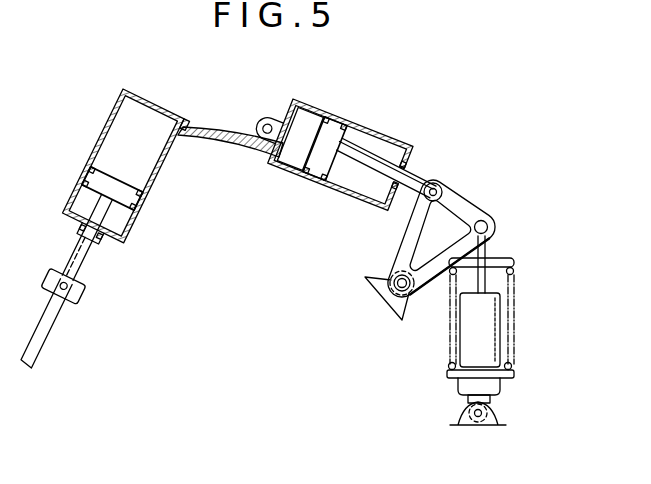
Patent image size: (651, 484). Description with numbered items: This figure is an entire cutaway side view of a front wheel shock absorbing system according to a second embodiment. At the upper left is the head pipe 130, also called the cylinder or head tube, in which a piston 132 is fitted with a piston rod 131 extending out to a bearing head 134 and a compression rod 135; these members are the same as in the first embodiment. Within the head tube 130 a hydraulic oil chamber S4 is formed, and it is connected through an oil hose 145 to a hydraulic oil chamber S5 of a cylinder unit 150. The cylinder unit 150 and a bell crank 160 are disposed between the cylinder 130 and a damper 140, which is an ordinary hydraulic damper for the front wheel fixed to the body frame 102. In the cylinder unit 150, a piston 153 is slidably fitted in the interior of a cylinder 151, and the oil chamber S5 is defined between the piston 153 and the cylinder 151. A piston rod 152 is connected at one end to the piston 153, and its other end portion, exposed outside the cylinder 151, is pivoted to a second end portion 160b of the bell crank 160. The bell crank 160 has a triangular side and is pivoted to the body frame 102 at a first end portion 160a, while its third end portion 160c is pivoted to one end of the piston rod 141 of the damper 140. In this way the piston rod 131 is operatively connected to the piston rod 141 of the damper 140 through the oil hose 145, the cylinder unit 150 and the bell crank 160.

The hydraulic oil chamber S4 is at (113, 145).
The head pipe 130 is at (161, 178).
The piston rod 131 is at (85, 262).
The piston 132 is at (140, 207).
The bearing head 134 is at (80, 292).
The compression rod 135 is at (48, 333).
The oil hose 145 is at (232, 137).
The hydraulic oil chamber S5 is at (303, 130).
The cylinder unit 150 is at (368, 120).
The cylinder 151 is at (395, 140).
The piston rod 152 is at (416, 183).
The piston 153 is at (330, 137).
The bell crank 160 is at (468, 207).
The first end portion 160a is at (405, 298).
The second end portion 160b is at (440, 185).
The third end portion 160c is at (490, 220).
The piston rod 141 is at (485, 248).
The damper 140 is at (515, 357).
The body frame 102 is at (395, 312).